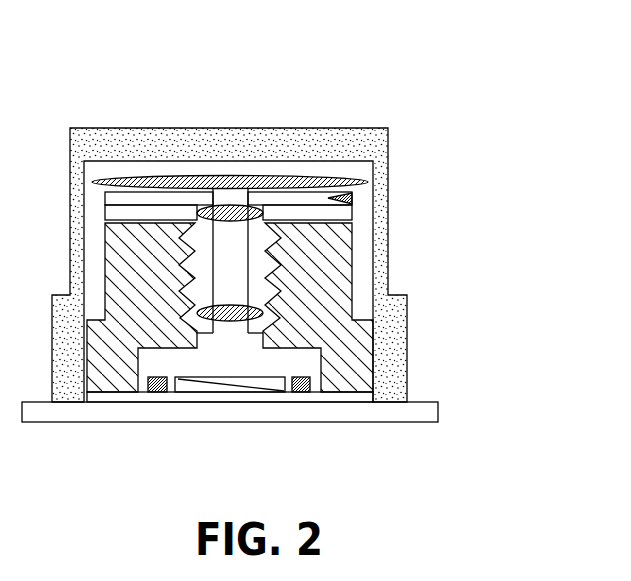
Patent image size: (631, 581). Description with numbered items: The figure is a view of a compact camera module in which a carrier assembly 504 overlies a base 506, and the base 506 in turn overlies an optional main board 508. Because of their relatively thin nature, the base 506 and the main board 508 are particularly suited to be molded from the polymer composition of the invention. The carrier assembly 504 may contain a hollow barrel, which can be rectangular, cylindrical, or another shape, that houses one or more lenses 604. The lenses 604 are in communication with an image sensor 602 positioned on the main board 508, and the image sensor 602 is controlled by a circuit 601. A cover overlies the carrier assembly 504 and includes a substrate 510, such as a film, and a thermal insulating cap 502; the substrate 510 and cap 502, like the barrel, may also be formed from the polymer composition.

The thermal insulating cap 502 is at (358, 138).
The carrier assembly 504 is at (353, 200).
The base 506 is at (320, 275).
The main board 508 is at (338, 397).
The substrate 510 is at (258, 187).
The circuit 601 is at (298, 392).
The image sensor 602 is at (220, 387).
The lenses 604 is at (202, 312).